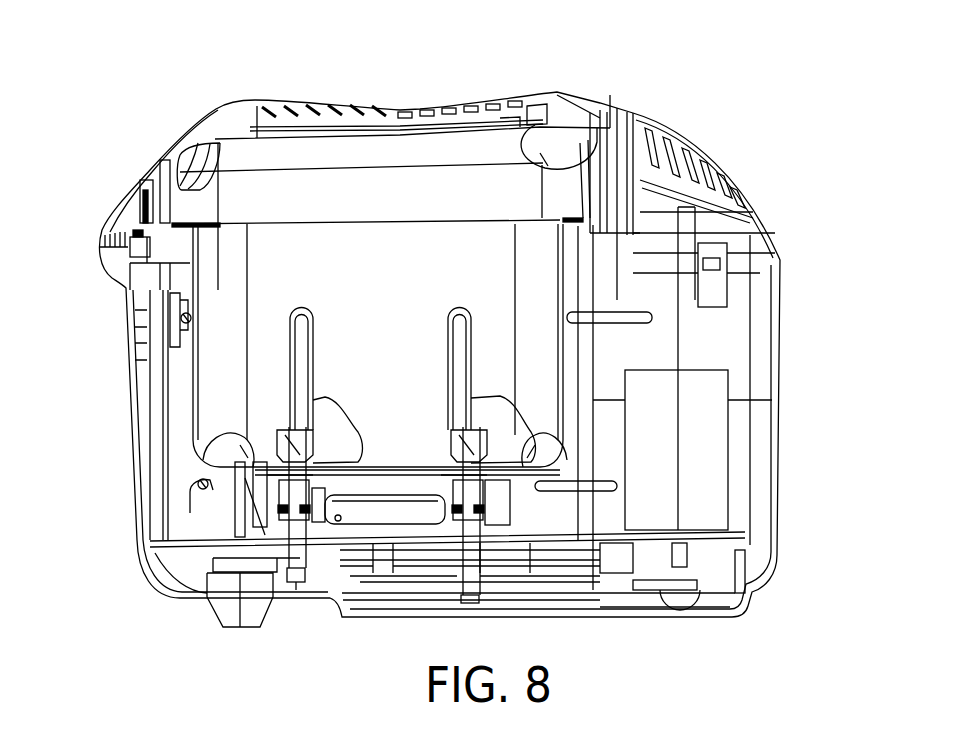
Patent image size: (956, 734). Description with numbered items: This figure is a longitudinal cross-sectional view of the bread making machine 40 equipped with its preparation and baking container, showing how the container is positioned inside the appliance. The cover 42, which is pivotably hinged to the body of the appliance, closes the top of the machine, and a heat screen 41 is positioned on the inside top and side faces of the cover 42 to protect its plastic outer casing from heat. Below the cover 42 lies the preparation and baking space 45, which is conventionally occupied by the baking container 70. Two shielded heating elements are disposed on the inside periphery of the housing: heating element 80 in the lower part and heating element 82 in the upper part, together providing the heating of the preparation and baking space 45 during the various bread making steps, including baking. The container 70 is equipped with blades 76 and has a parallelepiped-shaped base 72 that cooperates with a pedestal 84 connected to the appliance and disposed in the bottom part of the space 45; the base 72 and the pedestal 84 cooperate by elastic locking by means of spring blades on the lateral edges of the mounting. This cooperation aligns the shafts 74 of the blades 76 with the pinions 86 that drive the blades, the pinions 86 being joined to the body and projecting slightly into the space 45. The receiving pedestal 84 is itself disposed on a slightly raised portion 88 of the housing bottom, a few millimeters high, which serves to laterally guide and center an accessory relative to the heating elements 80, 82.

The bread making machine 40 is at (758, 151).
The heat screen 41 is at (192, 133).
The cover 42 is at (572, 110).
The preparation and baking space 45 is at (582, 361).
The baking container 70 is at (217, 380).
The base 72 is at (373, 482).
The shafts 74 is at (293, 450).
The blades 76 is at (322, 410).
The shielded heating element 80 is at (195, 480).
The shielded heating element 82 is at (190, 323).
The pedestal 84 is at (325, 522).
The pinions 86 is at (296, 584).
The raised portion 88 is at (232, 532).